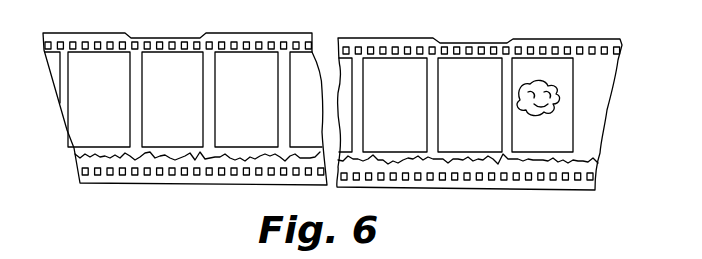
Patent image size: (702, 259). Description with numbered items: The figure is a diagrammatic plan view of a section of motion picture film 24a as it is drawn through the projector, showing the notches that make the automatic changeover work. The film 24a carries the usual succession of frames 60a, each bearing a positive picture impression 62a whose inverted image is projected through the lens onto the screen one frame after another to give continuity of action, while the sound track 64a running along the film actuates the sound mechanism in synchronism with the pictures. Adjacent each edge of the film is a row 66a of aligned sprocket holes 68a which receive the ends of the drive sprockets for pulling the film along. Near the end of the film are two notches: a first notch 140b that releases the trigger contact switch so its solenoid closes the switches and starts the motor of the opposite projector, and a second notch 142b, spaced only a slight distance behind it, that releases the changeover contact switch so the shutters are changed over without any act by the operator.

The row of aligned sprocket holes 66a is at (97, 42).
The notch 140b is at (156, 38).
The frame 60a is at (225, 63).
The sprocket hole 68a is at (274, 50).
The film 24a is at (400, 42).
The second notch 142b is at (467, 43).
The positive picture impression 62a is at (537, 97).
The sound track 64a is at (495, 165).